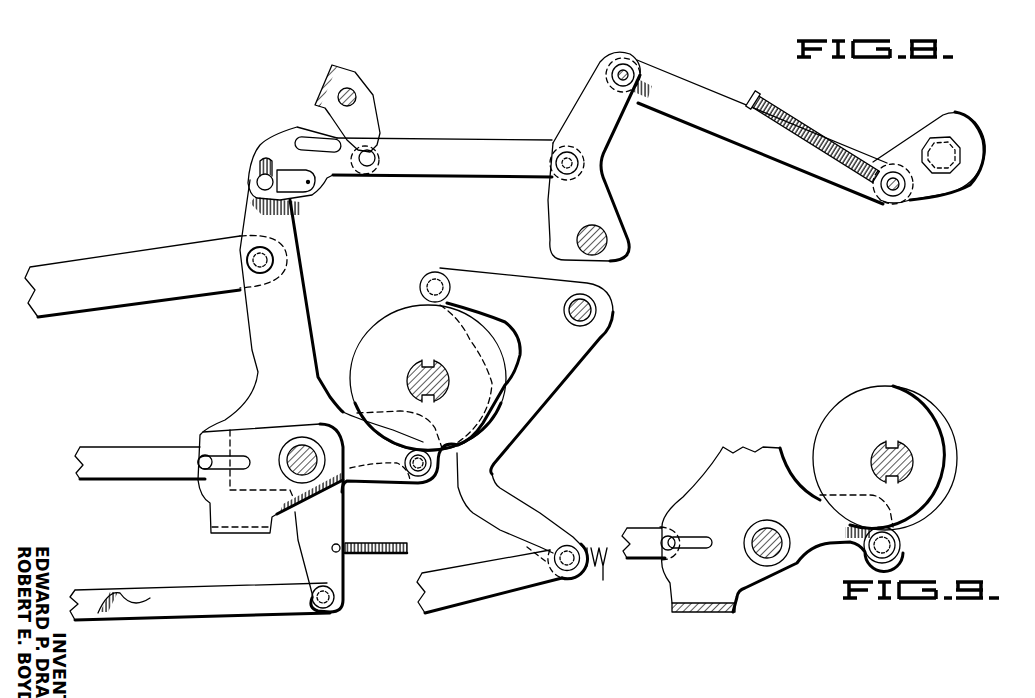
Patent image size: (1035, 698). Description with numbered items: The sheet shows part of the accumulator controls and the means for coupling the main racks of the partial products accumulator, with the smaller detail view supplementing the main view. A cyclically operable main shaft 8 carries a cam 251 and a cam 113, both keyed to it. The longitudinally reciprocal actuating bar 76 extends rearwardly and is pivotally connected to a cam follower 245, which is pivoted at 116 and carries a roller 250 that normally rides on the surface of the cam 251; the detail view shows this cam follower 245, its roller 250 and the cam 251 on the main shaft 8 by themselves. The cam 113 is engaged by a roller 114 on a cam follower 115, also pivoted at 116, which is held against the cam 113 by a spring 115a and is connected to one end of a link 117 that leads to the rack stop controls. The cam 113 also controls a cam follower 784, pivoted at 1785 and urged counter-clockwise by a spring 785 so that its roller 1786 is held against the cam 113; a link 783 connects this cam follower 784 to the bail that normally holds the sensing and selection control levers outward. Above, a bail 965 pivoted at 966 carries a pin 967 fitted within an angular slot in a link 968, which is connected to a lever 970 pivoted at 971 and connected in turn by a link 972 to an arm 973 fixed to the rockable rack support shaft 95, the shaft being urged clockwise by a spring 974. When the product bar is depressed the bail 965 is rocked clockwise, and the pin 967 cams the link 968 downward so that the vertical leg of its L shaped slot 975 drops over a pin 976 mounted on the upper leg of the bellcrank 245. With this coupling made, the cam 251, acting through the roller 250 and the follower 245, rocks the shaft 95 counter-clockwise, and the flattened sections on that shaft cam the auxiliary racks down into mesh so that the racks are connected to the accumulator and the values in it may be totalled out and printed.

In FIG. 8, the main shaft 8 is at (434, 371).
In FIG. 9, the main shaft 8 is at (902, 453).
In FIG. 8, the actuating bar 76 is at (173, 237).
In FIG. 8, the rack support shaft 95 is at (963, 149).
In FIG. 8, the cam 113 is at (500, 432).
In FIG. 8, the roller 114 is at (432, 478).
In FIG. 8, the cam follower 115 is at (357, 508).
In FIG. 8, the spring 115a is at (407, 554).
In FIG. 8, the pivot 116 is at (307, 445).
In FIG. 9, the pivot 116 is at (770, 531).
In FIG. 8, the link 117 is at (270, 607).
In FIG. 8, the cam follower 245 is at (258, 365).
In FIG. 9, the cam follower 245 is at (720, 476).
In FIG. 9, the roller 250 is at (901, 552).
In FIG. 8, the cam 251 is at (471, 314).
In FIG. 9, the cam 251 is at (940, 438).
In FIG. 8, the link 783 is at (472, 593).
In FIG. 8, the cam follower 784 is at (563, 388).
In FIG. 8, the spring 785 is at (590, 572).
In FIG. 8, the pivot 1785 is at (592, 310).
In FIG. 8, the roller 1786 is at (432, 273).
In FIG. 8, the bail 965 is at (367, 118).
In FIG. 8, the pivot 966 is at (356, 95).
In FIG. 8, the pin 967 is at (372, 156).
In FIG. 8, the link 968 is at (475, 141).
In FIG. 8, the lever 970 is at (597, 193).
In FIG. 8, the pivot 971 is at (607, 242).
In FIG. 8, the link 972 is at (710, 106).
In FIG. 8, the arm 973 is at (921, 195).
In FIG. 8, the spring 974 is at (810, 139).
In FIG. 8, the L shaped slot 975 is at (313, 190).
In FIG. 8, the pin 976 is at (259, 184).